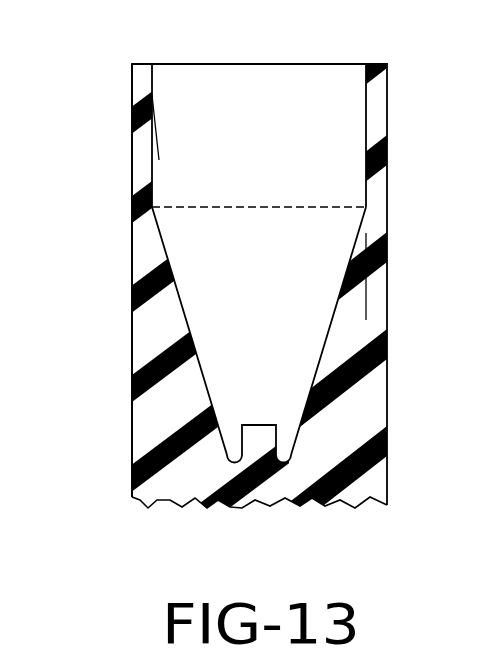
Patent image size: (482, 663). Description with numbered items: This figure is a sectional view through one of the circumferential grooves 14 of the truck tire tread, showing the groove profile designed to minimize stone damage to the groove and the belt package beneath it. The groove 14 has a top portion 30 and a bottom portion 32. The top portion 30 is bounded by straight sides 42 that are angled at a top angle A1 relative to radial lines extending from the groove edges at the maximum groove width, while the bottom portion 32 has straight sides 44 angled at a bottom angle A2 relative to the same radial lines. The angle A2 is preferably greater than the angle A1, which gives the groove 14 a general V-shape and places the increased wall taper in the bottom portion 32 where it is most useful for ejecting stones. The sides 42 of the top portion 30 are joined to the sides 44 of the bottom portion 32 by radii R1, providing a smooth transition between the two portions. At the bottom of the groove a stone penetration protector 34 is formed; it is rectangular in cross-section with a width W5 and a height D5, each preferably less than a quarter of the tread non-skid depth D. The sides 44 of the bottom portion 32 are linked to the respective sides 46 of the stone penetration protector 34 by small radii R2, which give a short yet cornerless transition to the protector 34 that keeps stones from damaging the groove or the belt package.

The circumferential groove 14 is at (210, 52).
The top portion 30 is at (122, 173).
The bottom portion 32 is at (120, 344).
The stone penetration protector 34 is at (257, 423).
The straight sides of top portion 42 is at (154, 77).
The straight sides of bottom portion 44 is at (178, 292).
The sides of stone penetration protector 46 is at (290, 420).
The top angle A1 is at (183, 137).
The bottom angle A2 is at (291, 283).
The radius linking top and bottom portion sides R1 is at (357, 196).
The radius linking bottom portion sides to protector sides R2 is at (232, 437).
The tread non-skid depth D is at (28, 64).
The height of stone penetration protector D5 is at (279, 426).
The width of stone penetration protector W5 is at (296, 552).